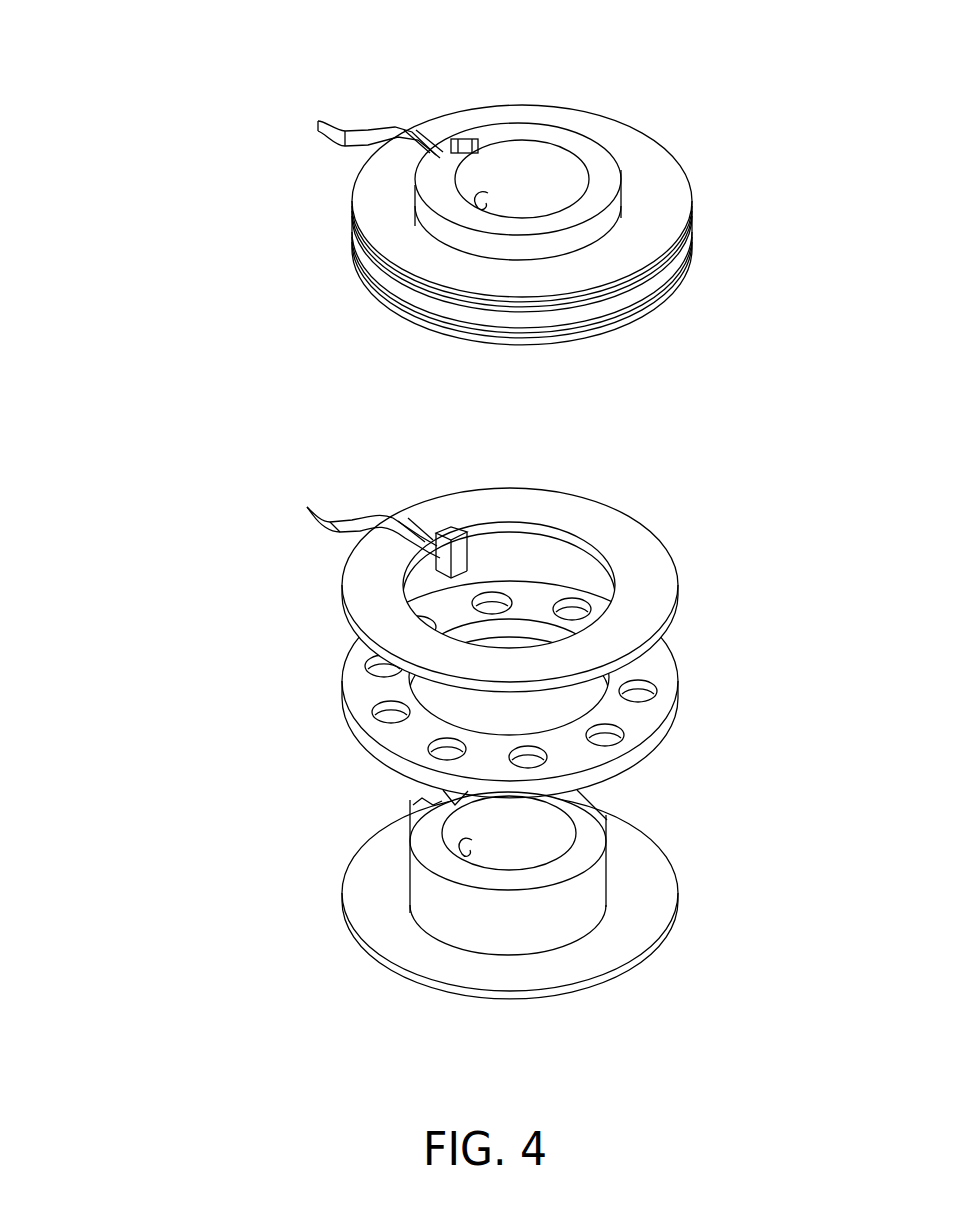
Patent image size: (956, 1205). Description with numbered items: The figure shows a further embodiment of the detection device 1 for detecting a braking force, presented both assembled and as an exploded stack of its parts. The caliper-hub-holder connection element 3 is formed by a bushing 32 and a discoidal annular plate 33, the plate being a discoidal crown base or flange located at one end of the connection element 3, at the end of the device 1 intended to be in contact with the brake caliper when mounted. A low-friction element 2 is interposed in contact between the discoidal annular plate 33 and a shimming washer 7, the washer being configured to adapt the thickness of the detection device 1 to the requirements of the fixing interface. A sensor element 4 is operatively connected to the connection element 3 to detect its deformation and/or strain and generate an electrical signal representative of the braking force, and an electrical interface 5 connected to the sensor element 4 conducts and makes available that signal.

The detection device 1 is at (185, 106).
The low-friction element 2 is at (672, 270).
The caliper-hub-holder connection element 3 is at (412, 908).
The sensor element 4 is at (467, 139).
The electrical interface 5 is at (317, 120).
The shimming washer 7 is at (672, 202).
The bushing 32 is at (562, 138).
The discoidal annular plate 33 is at (647, 310).